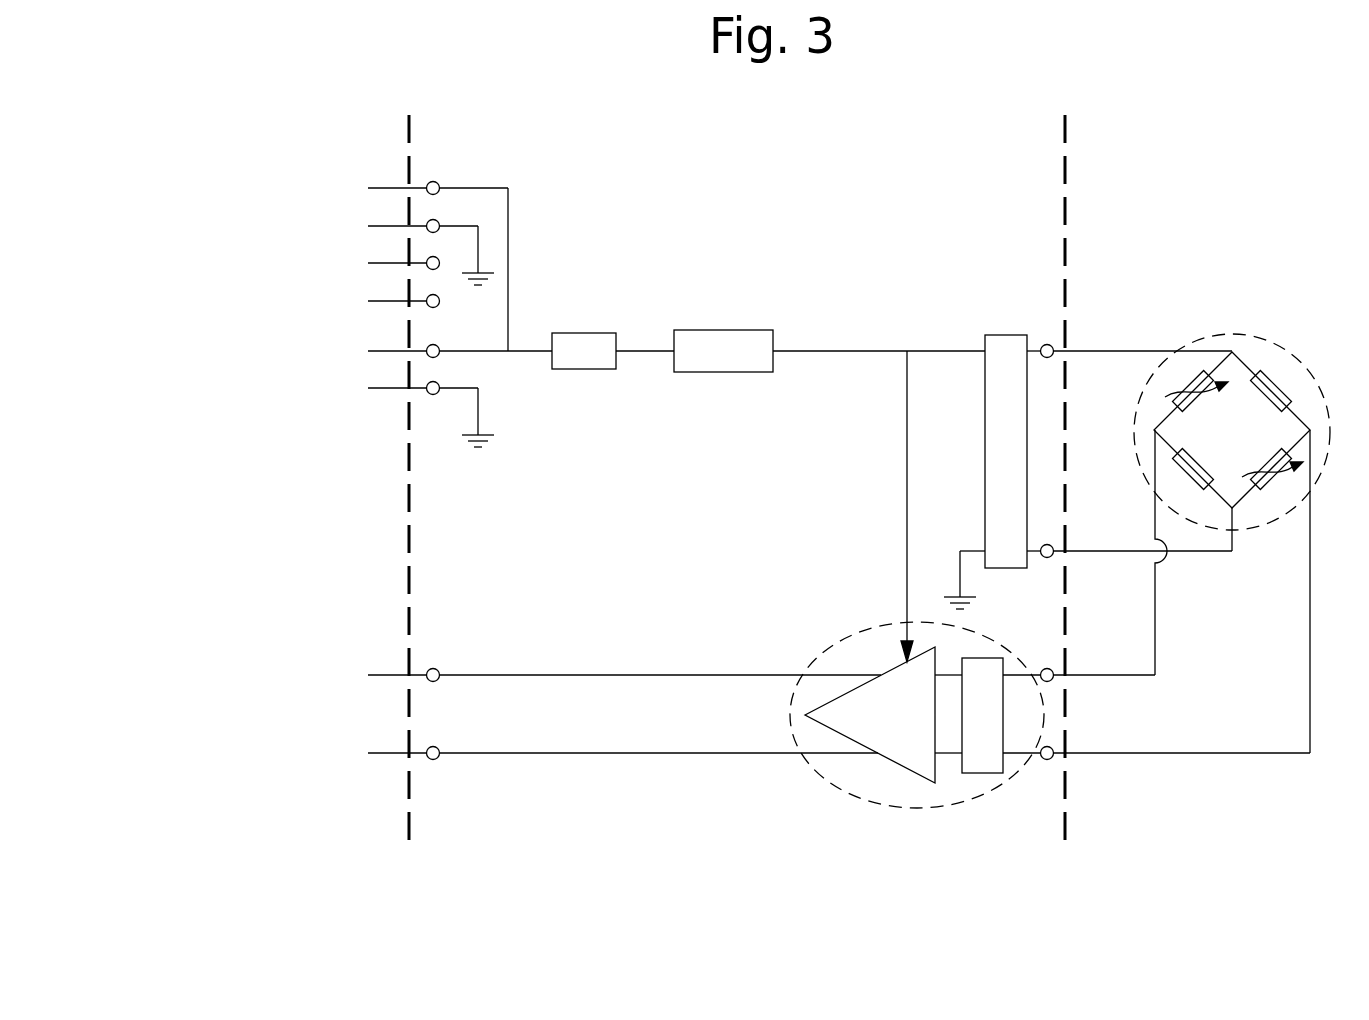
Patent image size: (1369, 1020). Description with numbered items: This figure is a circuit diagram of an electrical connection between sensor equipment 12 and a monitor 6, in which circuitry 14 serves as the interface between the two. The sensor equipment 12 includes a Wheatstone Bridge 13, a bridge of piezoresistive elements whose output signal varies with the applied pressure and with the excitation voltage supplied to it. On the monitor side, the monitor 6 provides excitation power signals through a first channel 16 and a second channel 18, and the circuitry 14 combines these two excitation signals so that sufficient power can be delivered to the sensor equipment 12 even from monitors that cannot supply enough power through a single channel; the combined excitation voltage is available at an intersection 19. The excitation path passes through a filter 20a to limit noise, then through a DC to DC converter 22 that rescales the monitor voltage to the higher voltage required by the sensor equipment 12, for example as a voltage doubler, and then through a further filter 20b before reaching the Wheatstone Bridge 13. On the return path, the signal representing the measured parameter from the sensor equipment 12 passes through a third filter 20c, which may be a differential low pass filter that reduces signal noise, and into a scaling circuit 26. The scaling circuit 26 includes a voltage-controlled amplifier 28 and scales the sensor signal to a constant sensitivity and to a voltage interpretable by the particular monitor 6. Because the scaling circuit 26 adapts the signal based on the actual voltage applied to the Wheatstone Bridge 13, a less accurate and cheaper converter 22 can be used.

The monitor 6 is at (318, 136).
The sensor equipment 12 is at (1162, 162).
The Wheatstone Bridge 13 is at (1235, 333).
The circuitry 14 is at (744, 160).
The first channel 16 is at (310, 335).
The second channel 18 is at (310, 175).
The intersection 19 is at (509, 353).
The filter 20a is at (586, 333).
The filter 20b is at (1006, 335).
The third filter 20c is at (985, 773).
The DC to DC converter 22 is at (724, 330).
The scaling circuit 26 is at (862, 628).
The voltage-controlled amplifier 28 is at (870, 715).